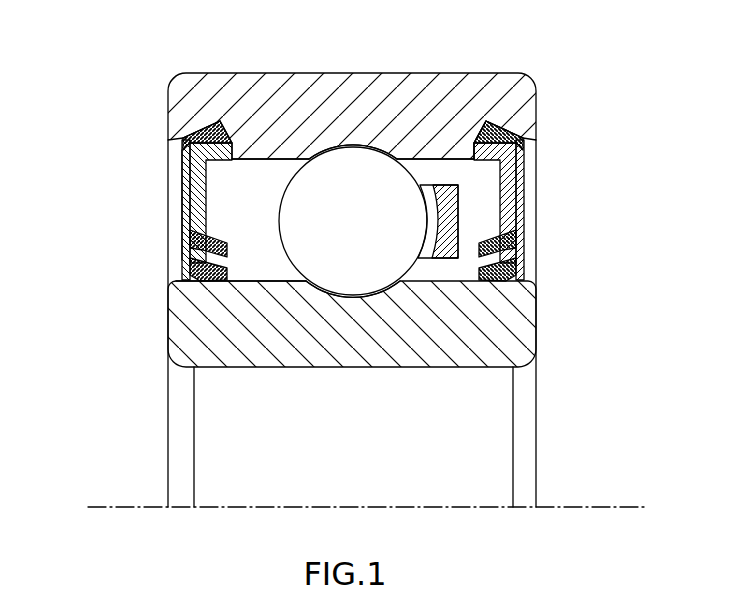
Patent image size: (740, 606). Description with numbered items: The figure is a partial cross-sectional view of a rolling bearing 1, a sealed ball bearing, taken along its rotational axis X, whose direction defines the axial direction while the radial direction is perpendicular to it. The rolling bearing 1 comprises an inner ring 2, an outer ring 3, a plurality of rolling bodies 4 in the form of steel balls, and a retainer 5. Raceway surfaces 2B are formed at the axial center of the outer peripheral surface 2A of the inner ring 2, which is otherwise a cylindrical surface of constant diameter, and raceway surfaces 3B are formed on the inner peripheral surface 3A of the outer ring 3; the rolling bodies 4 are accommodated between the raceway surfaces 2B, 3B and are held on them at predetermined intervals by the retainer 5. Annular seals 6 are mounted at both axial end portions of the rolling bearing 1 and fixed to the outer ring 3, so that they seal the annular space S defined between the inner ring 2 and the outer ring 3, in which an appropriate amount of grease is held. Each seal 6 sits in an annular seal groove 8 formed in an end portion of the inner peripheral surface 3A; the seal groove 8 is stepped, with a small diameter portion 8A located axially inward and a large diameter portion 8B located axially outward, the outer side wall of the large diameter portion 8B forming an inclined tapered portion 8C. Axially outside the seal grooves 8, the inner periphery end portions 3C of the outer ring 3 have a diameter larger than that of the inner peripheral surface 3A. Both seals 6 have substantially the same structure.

The rolling bearing 1 is at (590, 57).
The inner ring 2 is at (510, 312).
The outer peripheral surface 2A is at (243, 283).
The raceway surfaces 2B is at (335, 287).
The outer ring 3 is at (320, 113).
The inner peripheral surface 3A is at (263, 158).
The raceway surfaces 3B is at (362, 146).
The inner periphery end portions 3C is at (535, 148).
The rolling bodies 4 is at (377, 178).
The retainer 5 is at (445, 195).
The seal 6 is at (346, 179).
The seal groove 8 is at (532, 134).
The small diameter portion 8A is at (170, 188).
The large diameter portion 8B is at (170, 165).
The tapered portion 8C is at (170, 153).
The annular space S is at (248, 193).
The rotational axis X is at (596, 507).